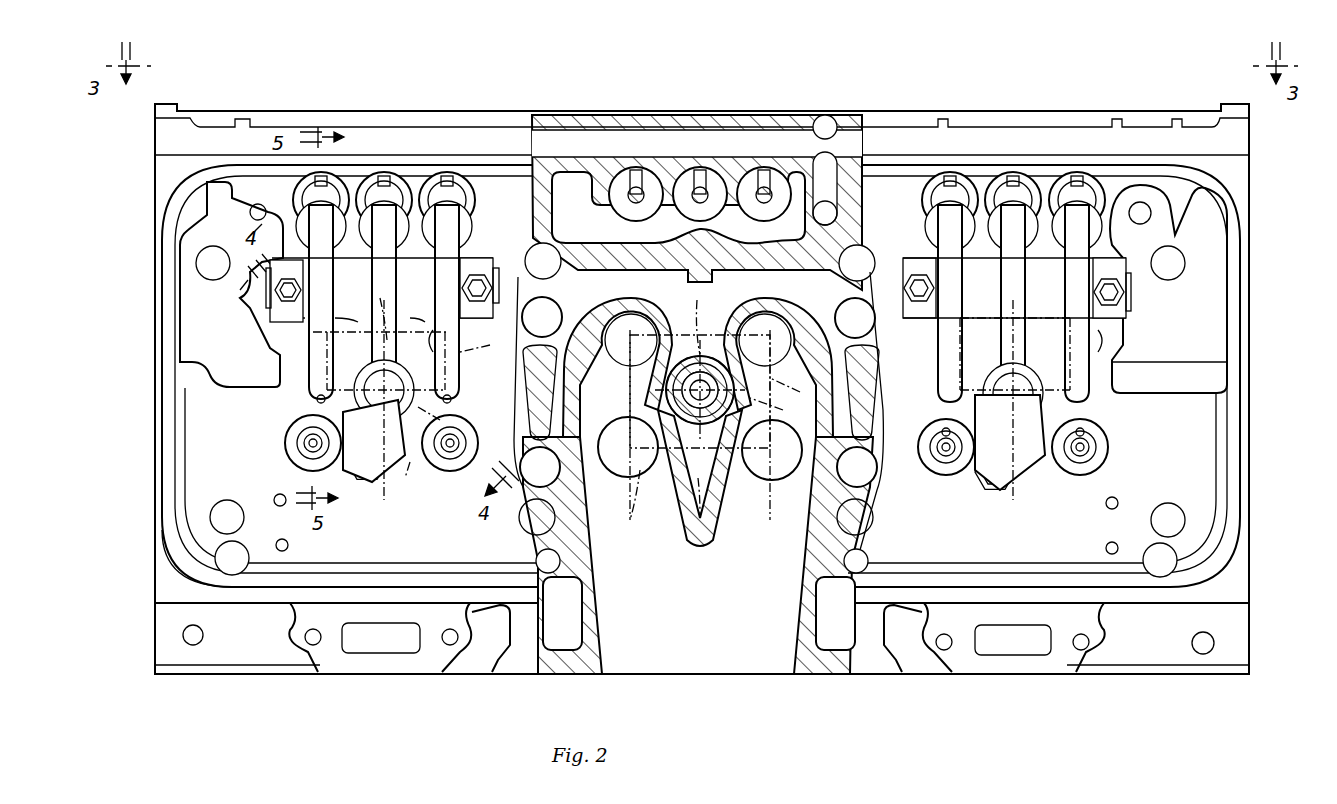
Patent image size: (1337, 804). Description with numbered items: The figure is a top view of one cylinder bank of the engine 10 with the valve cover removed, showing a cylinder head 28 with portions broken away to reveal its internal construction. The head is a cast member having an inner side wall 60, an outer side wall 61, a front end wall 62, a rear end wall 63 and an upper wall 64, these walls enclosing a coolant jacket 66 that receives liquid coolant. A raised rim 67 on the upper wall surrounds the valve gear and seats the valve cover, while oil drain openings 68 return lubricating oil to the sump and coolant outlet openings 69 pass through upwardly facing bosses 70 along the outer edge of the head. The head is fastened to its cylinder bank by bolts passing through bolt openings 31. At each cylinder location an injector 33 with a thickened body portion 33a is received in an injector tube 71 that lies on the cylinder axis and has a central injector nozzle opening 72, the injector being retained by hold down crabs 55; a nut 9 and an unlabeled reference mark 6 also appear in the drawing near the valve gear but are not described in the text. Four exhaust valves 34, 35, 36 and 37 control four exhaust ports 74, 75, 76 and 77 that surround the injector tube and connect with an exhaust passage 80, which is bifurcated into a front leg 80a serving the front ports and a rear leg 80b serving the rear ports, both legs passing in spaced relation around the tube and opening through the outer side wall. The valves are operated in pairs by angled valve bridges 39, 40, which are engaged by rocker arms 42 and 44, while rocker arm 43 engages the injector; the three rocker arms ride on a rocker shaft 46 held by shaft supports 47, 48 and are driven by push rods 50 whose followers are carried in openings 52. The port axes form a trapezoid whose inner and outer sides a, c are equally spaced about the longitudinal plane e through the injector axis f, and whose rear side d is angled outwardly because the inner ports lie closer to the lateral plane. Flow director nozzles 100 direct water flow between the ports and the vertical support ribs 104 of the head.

The internal combustion engine 10 is at (1262, 185).
The inner side wall 60 is at (462, 110).
The outer side wall 61 is at (458, 676).
The front end wall 62 is at (160, 500).
The rear end wall 63 is at (1246, 476).
The upper wall 64 is at (200, 424).
The raised rim 67 is at (170, 540).
The coolant jacket 66 is at (838, 245).
The oil drain openings 68 is at (225, 557).
The coolant outlet openings 69 is at (362, 648).
The upwardly facing bosses 70 is at (393, 660).
The exhaust passage 80 is at (711, 410).
The front leg 80a is at (440, 445).
The rear leg 80b is at (840, 541).
The push rods 50 is at (760, 180).
The openings 52 is at (384, 190).
The rocker arm 42 is at (330, 215).
The rocker arm 43 is at (380, 228).
The rocker arm 44 is at (445, 215).
The shaft support 47 is at (283, 313).
The shaft support 48 is at (478, 265).
The rocker shaft 46 is at (492, 297).
The exhaust valve 35 is at (285, 327).
The cylinder head 28 is at (1200, 405).
The cylinder head bolt openings 31 is at (213, 263).
The exhaust port 75 is at (610, 360).
The exhaust port 77 is at (786, 360).
The vertical support ribs 104 is at (530, 385).
The dual opening flow director nozzles 100 is at (540, 318).
The injector nozzle opening 72 is at (690, 418).
The hex nut 9 is at (368, 476).
The axis of the injector opening f is at (712, 430).
The injector 33 is at (355, 398).
The thickened body portion 33a is at (362, 485).
The exhaust valve 34 is at (300, 460).
The exhaust valve 36 is at (445, 468).
The valve bridge 39 is at (300, 392).
The valve bridge 40 is at (455, 410).
The exhaust valve 37 is at (465, 340).
The injector hold down crabs 55 is at (418, 330).
The axis line 6 is at (312, 376).
The injector tube 71 is at (617, 425).
The exhaust port 74 is at (622, 495).
The exhaust port 76 is at (786, 425).
The inner side of trapezoid a is at (537, 317).
The outer side of trapezoid c is at (551, 486).
The rear side of trapezoid d is at (637, 371).
The longitudinal plane e is at (604, 411).